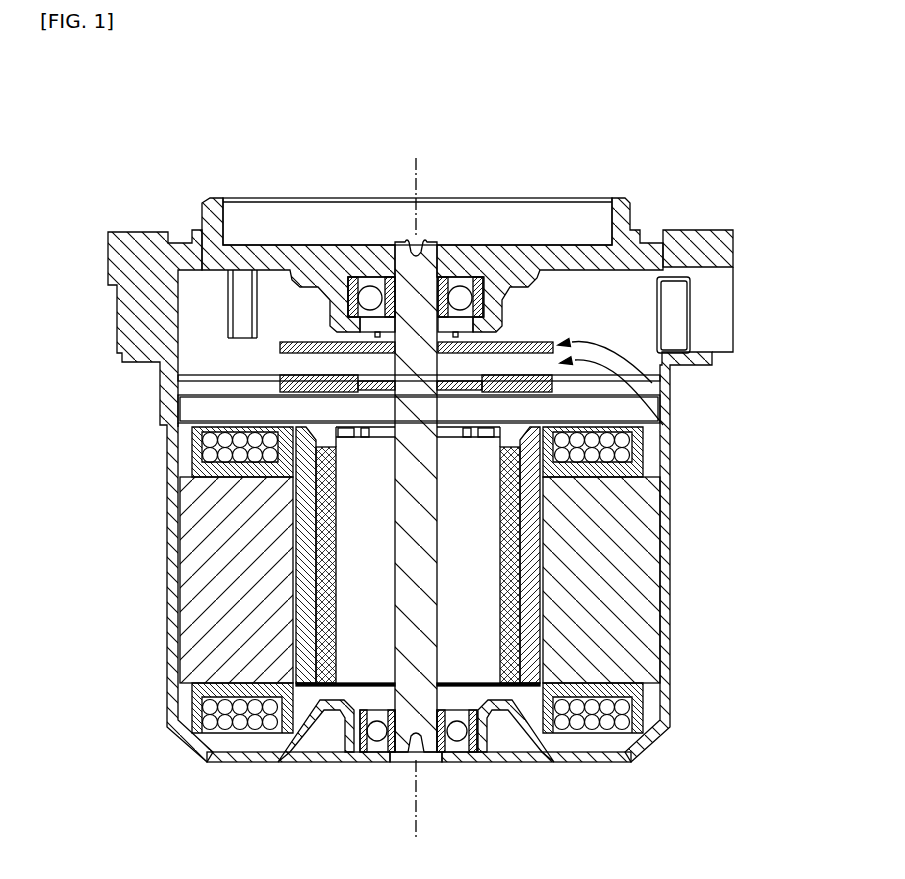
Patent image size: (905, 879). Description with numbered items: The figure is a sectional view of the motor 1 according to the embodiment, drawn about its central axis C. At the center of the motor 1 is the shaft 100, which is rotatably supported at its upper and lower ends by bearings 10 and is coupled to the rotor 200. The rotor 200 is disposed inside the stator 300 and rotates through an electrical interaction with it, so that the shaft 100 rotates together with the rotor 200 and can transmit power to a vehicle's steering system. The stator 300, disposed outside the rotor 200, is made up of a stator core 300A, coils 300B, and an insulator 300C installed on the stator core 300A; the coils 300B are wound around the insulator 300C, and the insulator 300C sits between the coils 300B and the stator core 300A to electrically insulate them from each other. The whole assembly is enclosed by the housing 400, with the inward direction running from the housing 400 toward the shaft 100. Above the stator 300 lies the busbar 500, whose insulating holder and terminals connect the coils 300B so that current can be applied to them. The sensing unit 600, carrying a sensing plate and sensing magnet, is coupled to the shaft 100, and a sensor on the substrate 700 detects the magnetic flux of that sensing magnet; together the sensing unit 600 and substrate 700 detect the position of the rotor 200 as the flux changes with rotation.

The motor 1 is at (71, 84).
The bearings 10 is at (483, 277).
The shaft 100 is at (418, 580).
The rotor 200 is at (345, 499).
The stator 300 is at (755, 455).
The stator core 300A is at (635, 515).
The coils 300B is at (607, 440).
The insulator 300C is at (642, 466).
The housing 400 is at (158, 384).
The busbar 500 is at (175, 425).
The sensing unit 600 is at (658, 397).
The substrate 700 is at (658, 377).
The central axis C is at (415, 496).